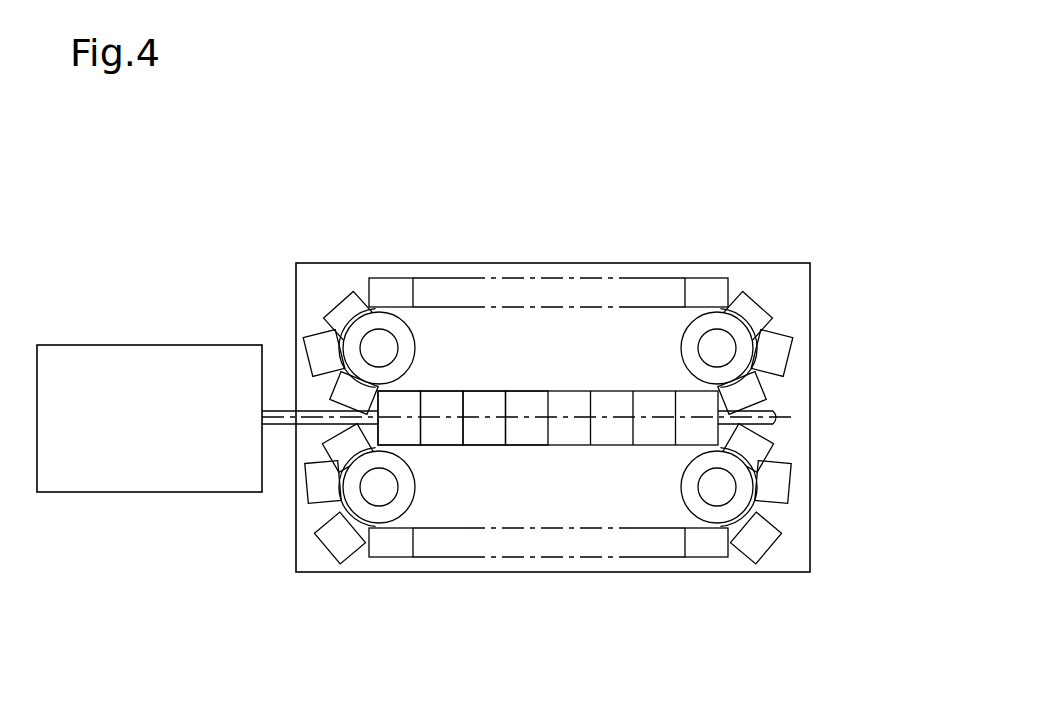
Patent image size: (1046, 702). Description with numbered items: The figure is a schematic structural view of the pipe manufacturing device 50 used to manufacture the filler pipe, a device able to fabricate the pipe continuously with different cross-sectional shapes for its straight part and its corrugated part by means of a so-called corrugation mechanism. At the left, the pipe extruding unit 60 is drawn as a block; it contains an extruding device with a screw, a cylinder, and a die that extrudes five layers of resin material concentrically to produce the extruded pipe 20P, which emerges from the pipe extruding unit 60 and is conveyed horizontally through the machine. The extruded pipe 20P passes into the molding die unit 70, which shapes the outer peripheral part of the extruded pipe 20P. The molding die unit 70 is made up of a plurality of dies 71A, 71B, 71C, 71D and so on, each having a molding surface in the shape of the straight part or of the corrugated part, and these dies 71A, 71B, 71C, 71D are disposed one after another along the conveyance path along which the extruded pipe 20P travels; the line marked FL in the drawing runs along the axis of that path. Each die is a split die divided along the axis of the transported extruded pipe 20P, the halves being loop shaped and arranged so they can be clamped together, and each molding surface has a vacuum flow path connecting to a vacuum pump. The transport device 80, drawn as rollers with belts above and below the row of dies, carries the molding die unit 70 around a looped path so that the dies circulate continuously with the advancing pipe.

The pipe manufacturing device 50 is at (306, 216).
The pipe extruding unit 60 is at (169, 292).
The molding die unit 70 is at (743, 287).
The transport device 80 is at (729, 341).
The die 71A is at (518, 438).
The die 71B is at (483, 438).
The die 71C is at (443, 397).
The die 71D is at (412, 397).
The extruded pipe 20P is at (275, 427).
The feed line FL is at (787, 418).